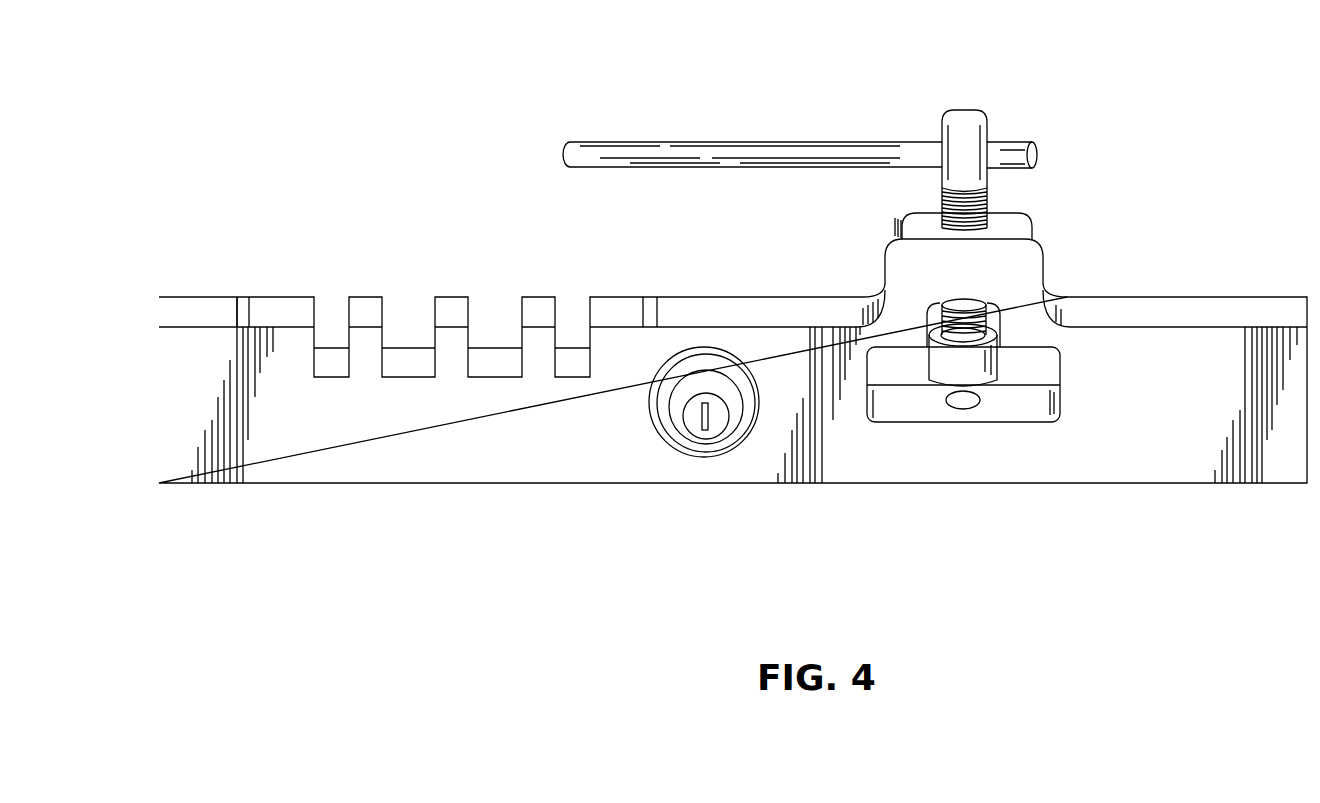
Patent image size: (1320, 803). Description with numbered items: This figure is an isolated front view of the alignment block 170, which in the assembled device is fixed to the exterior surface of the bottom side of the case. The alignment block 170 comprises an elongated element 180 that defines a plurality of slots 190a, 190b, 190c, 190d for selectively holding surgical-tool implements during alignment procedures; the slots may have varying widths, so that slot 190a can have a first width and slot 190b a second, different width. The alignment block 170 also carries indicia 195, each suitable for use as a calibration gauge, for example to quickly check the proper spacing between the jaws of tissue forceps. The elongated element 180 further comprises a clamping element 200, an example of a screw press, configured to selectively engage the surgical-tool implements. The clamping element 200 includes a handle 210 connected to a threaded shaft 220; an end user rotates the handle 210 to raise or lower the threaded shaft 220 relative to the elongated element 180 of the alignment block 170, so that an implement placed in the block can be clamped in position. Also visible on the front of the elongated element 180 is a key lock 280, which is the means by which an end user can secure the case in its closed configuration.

The alignment block 170 is at (310, 140).
The elongated element 180 is at (915, 470).
The slot 190a is at (331, 296).
The slot 190b is at (408, 295).
The slot 190c is at (503, 295).
The slot 190d is at (571, 295).
The indicia 195 is at (243, 294).
The clamping element 200 is at (1090, 183).
The handle 210 is at (750, 142).
The threaded shaft 220 is at (960, 108).
The key lock 280 is at (705, 460).